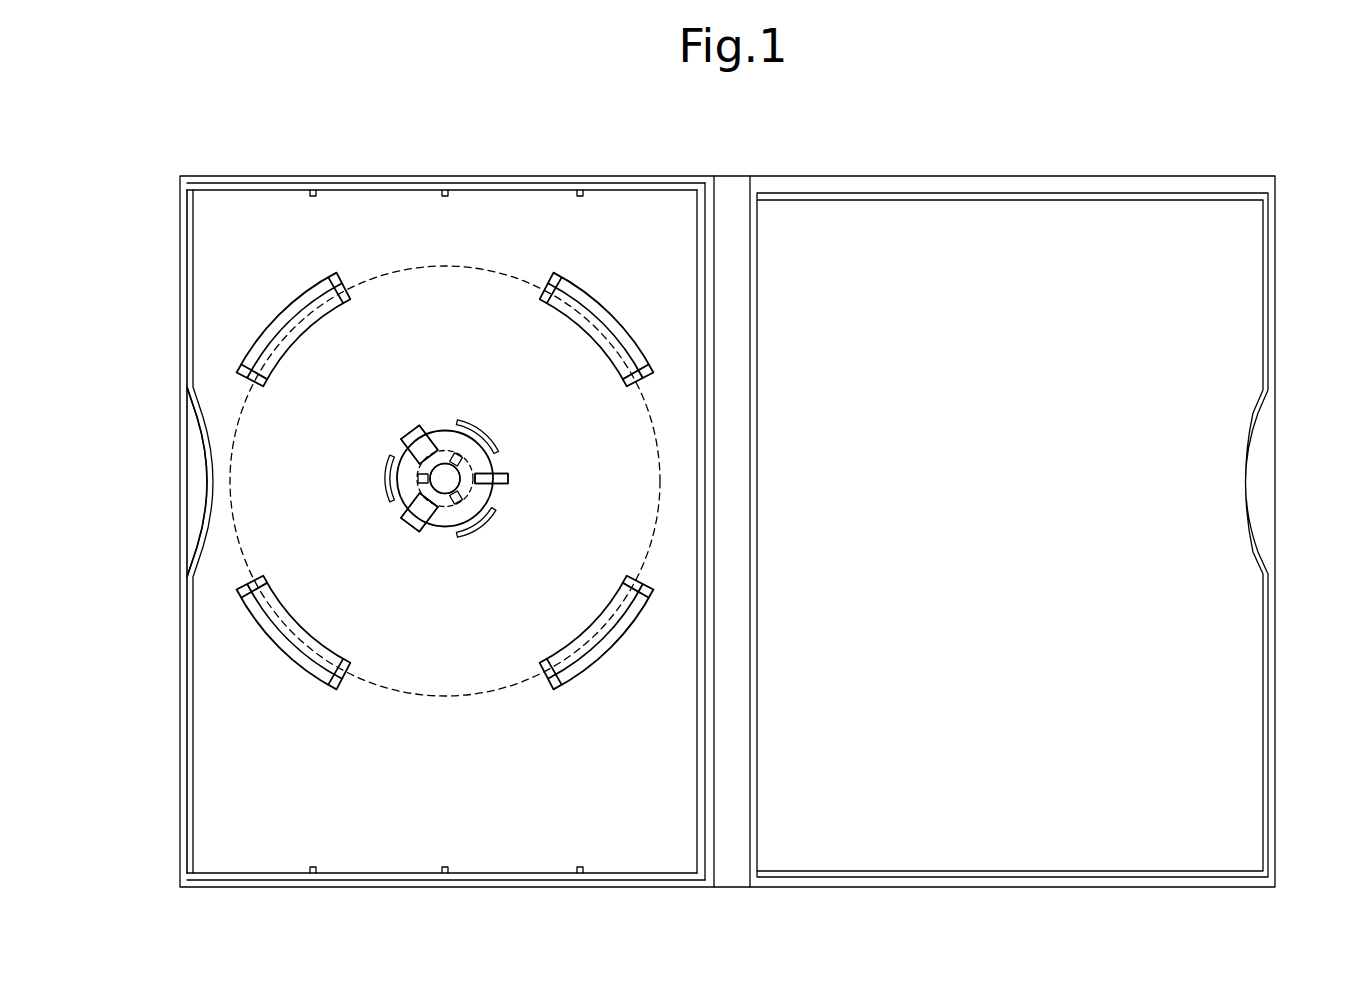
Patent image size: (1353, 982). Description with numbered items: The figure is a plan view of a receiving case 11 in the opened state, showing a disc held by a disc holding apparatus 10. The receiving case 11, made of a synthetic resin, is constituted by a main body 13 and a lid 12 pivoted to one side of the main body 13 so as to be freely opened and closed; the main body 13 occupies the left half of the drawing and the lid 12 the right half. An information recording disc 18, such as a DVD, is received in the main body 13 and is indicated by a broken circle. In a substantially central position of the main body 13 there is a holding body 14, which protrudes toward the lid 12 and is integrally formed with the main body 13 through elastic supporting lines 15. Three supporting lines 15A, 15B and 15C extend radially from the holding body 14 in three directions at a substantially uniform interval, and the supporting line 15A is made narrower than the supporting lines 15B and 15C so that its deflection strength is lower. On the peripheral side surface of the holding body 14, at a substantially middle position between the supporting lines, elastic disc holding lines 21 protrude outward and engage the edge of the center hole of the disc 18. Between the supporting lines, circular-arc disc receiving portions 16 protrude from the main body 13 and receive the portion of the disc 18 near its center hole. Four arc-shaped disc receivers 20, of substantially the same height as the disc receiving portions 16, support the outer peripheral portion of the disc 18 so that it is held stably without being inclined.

The disc holding apparatus 10 is at (402, 415).
The receiving case 11 is at (500, 168).
The lid 12 is at (1283, 470).
The main body 13 is at (258, 495).
The holding body 14 is at (443, 481).
The supporting line 15 is at (406, 543).
The supporting line 15A is at (501, 472).
The supporting line 15B is at (430, 420).
The supporting line 15C is at (446, 532).
The disc receiving portion 16 is at (472, 420).
The information recording disc 18 is at (228, 398).
The disc receiver 20 is at (283, 315).
The disc holding line 21 is at (456, 445).